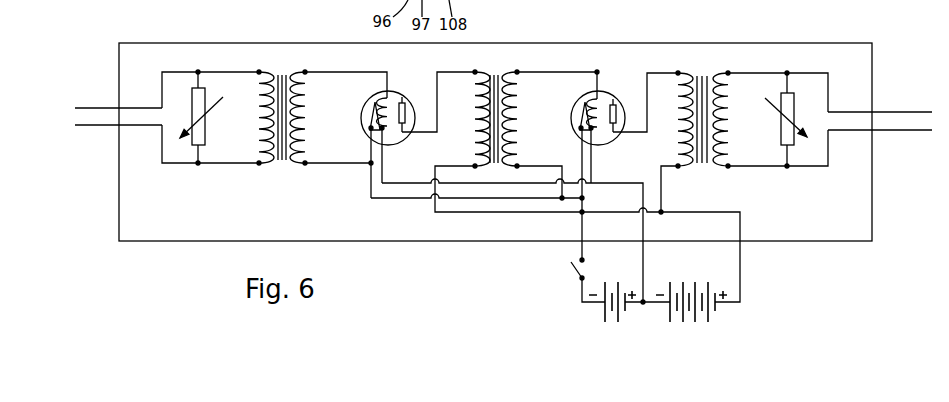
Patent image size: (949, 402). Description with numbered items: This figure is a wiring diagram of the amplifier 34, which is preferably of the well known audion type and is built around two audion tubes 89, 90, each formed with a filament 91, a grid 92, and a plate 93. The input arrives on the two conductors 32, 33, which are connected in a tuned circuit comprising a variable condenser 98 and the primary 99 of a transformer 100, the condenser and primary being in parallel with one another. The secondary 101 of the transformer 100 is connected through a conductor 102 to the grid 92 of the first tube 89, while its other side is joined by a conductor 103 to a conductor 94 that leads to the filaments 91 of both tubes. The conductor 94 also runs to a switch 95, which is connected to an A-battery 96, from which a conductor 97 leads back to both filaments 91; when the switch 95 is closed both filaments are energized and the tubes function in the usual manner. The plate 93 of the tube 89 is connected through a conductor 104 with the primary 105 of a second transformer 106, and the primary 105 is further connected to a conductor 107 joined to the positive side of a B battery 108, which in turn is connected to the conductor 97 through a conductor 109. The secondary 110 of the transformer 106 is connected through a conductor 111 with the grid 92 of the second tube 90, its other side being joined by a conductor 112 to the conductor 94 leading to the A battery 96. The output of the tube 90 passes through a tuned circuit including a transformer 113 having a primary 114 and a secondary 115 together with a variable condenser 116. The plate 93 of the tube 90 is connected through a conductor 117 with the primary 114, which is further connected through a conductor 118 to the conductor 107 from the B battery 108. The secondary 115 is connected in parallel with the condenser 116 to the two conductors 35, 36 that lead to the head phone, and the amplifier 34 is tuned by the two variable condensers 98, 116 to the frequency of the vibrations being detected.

The conductor 32 is at (97, 127).
The conductor 33 is at (98, 107).
The amplifier 34 is at (157, 228).
The conductor 35 is at (905, 112).
The conductor 36 is at (910, 133).
The audion tube 89 is at (398, 94).
The audion tube 90 is at (613, 98).
The filament 91 is at (362, 110).
The grid 92 is at (386, 98).
The plate 93 is at (404, 100).
The conductor 94 is at (395, 200).
The switch 95 is at (570, 275).
The A-battery 96 is at (603, 312).
The conductor 97 is at (468, 185).
The variable condenser 98 is at (202, 88).
The primary 99 is at (258, 92).
The transformer 100 is at (285, 72).
The secondary 101 is at (305, 140).
The conductor 102 is at (330, 72).
The conductor 103 is at (333, 166).
The conductor 104 is at (435, 125).
The primary 105 is at (480, 72).
The transformer 106 is at (495, 72).
The conductor 107 is at (502, 212).
The B battery 108 is at (712, 315).
The conductor 109 is at (655, 305).
The secondary 110 is at (517, 103).
The conductor 111 is at (540, 72).
The conductor 112 is at (536, 165).
The transformer 113 is at (707, 73).
The primary 114 is at (685, 77).
The secondary 115 is at (728, 107).
The variable condenser 116 is at (790, 100).
The conductor 117 is at (651, 72).
The conductor 118 is at (662, 193).